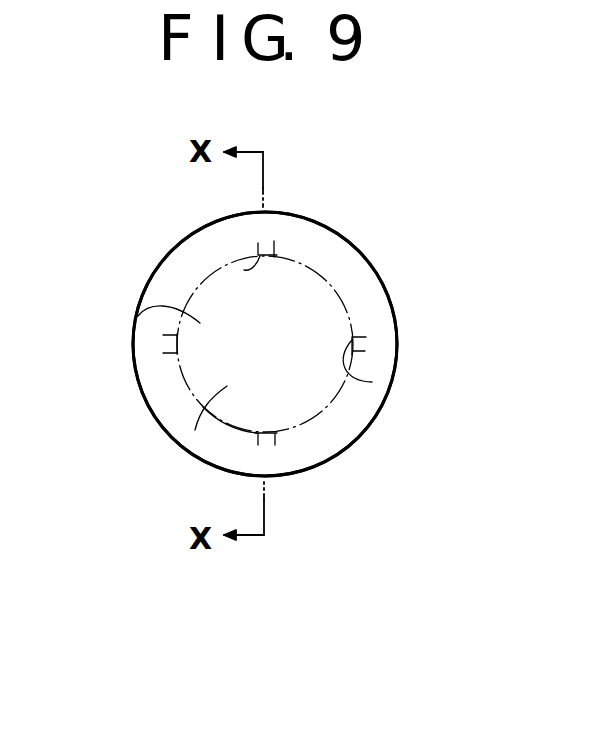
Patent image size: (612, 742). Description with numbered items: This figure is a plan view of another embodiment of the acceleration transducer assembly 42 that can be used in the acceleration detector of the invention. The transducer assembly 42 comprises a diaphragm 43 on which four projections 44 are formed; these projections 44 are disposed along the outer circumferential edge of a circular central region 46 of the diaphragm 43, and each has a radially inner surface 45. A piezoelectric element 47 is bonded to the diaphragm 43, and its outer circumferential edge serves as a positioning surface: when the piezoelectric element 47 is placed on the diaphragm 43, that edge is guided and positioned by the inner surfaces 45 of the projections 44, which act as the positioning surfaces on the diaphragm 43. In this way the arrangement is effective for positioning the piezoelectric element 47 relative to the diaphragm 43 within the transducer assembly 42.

The acceleration transducer assembly 42 is at (378, 266).
The diaphragm 43 is at (173, 281).
The projections 44 is at (275, 244).
The radially inner surfaces 45 is at (244, 270).
The circular central region 46 is at (195, 430).
The piezoelectric element 47 is at (138, 316).